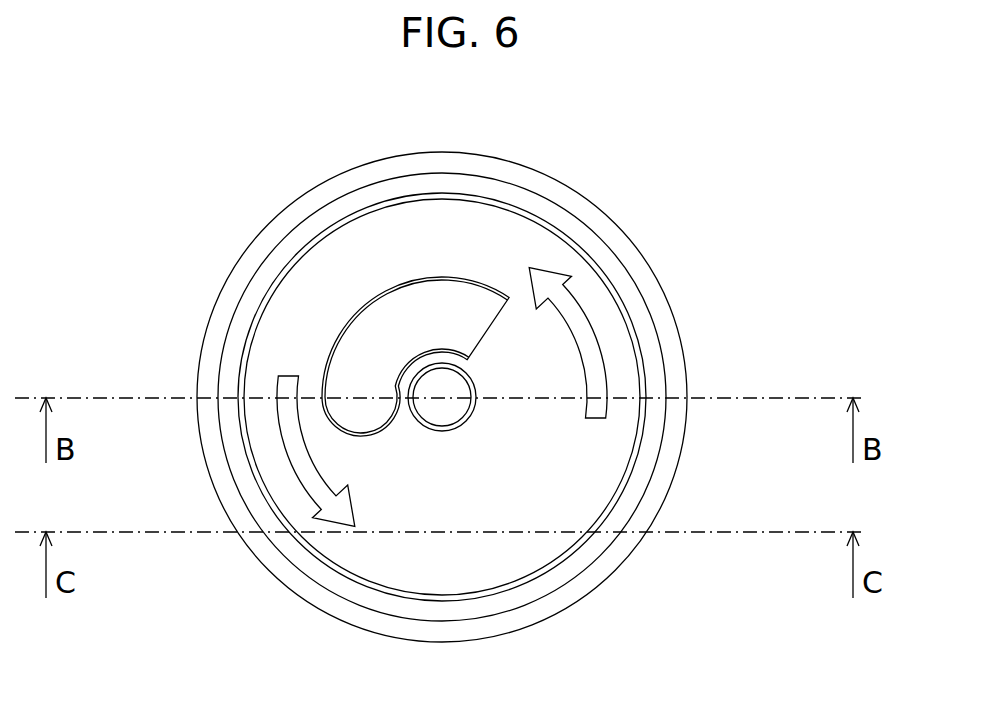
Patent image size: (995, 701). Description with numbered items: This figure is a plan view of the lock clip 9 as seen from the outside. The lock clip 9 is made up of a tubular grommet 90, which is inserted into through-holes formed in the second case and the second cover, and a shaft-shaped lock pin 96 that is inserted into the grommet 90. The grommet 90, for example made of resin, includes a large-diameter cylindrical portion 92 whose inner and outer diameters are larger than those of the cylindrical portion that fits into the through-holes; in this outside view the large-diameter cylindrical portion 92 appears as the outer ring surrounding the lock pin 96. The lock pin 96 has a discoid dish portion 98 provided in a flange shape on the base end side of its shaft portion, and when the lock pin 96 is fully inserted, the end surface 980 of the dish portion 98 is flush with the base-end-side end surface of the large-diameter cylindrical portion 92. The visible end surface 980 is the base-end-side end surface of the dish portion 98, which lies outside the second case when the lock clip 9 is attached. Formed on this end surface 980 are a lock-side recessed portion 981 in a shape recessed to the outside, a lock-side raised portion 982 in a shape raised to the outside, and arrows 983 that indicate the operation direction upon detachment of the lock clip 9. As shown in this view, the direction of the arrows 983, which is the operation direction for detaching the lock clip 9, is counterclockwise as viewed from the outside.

The lock clip 9 is at (750, 139).
The grommet 90 is at (615, 232).
The large-diameter cylindrical portion 92 is at (672, 343).
The lock pin 96 is at (605, 310).
The dish portion 98 is at (640, 443).
The end surface 980 is at (443, 237).
The lock-side recessed portion 981 is at (340, 373).
The lock-side raised portion 982 is at (432, 383).
The arrows 983 is at (605, 378).